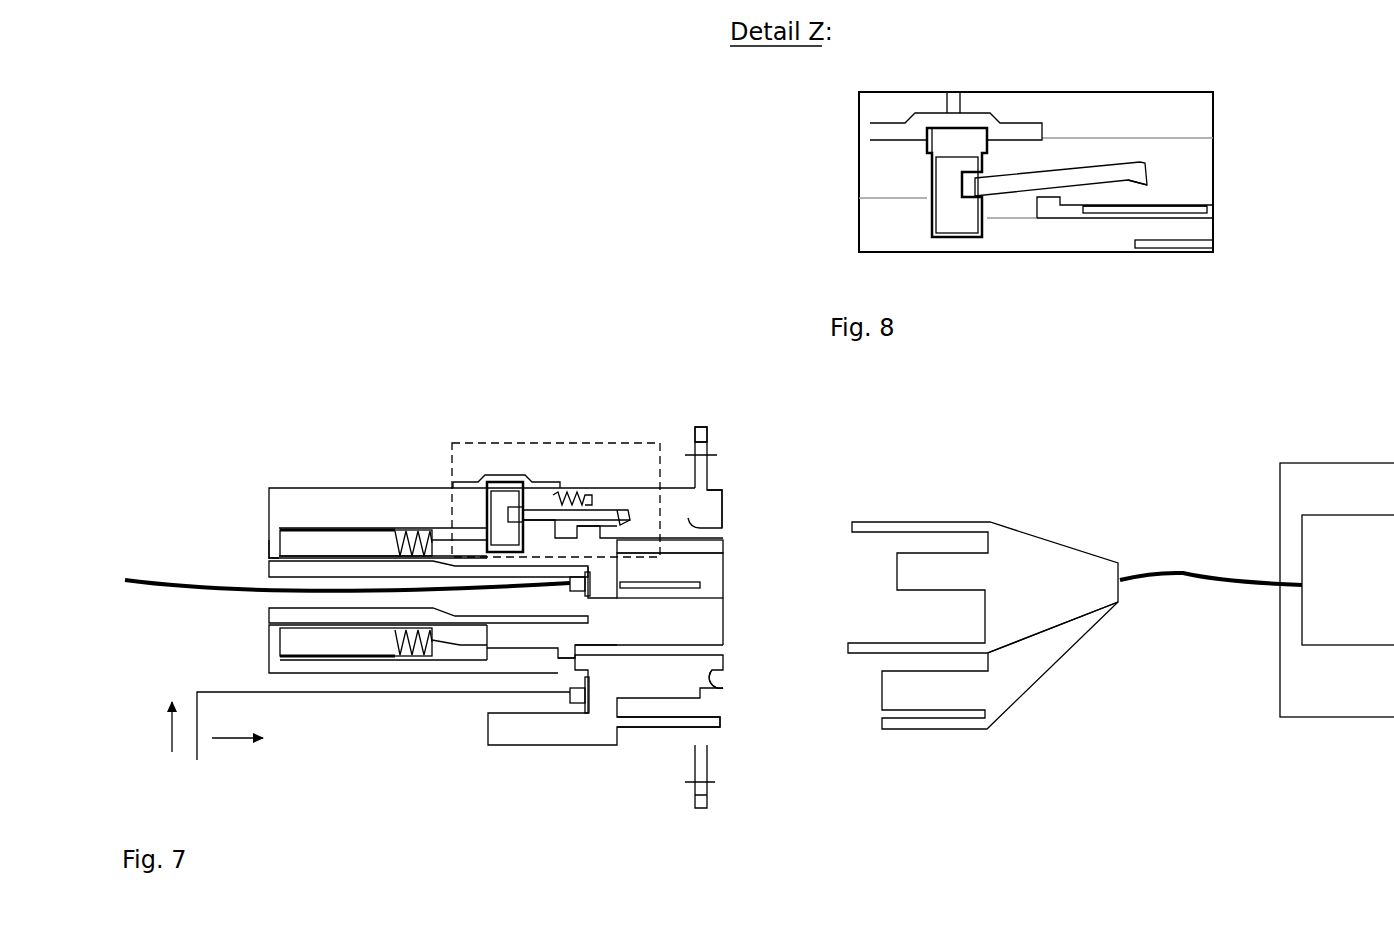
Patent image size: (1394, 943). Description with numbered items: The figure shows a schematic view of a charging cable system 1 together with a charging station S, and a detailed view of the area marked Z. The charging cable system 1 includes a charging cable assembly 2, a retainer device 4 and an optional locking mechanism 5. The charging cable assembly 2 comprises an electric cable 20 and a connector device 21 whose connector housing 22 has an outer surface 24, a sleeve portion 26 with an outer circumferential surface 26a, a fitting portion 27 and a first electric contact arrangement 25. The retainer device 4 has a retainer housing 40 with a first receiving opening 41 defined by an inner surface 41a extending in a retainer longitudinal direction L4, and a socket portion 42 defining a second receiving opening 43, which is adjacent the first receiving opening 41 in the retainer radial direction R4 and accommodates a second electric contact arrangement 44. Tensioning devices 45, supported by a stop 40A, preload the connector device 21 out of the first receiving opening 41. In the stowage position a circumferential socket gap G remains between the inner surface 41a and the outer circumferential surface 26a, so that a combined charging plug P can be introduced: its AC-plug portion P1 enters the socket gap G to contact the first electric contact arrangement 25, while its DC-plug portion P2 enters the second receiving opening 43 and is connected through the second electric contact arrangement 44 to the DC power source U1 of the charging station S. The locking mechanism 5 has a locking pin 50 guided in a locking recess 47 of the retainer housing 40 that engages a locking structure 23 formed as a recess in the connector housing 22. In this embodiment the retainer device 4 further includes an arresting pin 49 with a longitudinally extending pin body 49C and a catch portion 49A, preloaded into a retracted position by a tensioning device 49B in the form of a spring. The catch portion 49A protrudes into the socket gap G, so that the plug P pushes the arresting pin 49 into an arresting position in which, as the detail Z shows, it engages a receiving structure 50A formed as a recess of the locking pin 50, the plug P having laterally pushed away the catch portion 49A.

In FIG. 7, the charging cable system 1 is at (312, 250).
In FIG. 7, the charging cable assembly 2 is at (208, 495).
In FIG. 7, the retainer device 4 is at (290, 484).
In FIG. 7, the locking mechanism 5 is at (546, 340).
In FIG. 7, the electric cable 20 is at (152, 562).
In FIG. 7, the connector device 21 is at (730, 548).
In FIG. 7, the connector housing 22 is at (610, 630).
In FIG. 8, the connector housing 22 is at (1053, 238).
In FIG. 7, the locking structure 23 is at (490, 500).
In FIG. 8, the locking structure 23 is at (953, 237).
In FIG. 7, the outer surface 24 is at (468, 654).
In FIG. 7, the first electric contact arrangement 25 is at (738, 598).
In FIG. 7, the sleeve portion 26 is at (648, 534).
In FIG. 7, the outer circumferential surface 26a is at (612, 508).
In FIG. 7, the fitting portion 27 is at (564, 666).
In FIG. 7, the retainer housing 40 is at (366, 488).
In FIG. 8, the retainer housing 40 is at (1200, 170).
In FIG. 7, the stop 40A is at (273, 550).
In FIG. 7, the first receiving opening 41 is at (720, 530).
In FIG. 7, the inner surface 41a is at (688, 487).
In FIG. 7, the socket portion 42 is at (651, 752).
In FIG. 7, the second receiving opening 43 is at (711, 675).
In FIG. 7, the second electric contact arrangement 44 is at (750, 730).
In FIG. 7, the tensioning device 45 is at (344, 660).
In FIG. 7, the locking recess 47 is at (486, 490).
In FIG. 8, the locking recess 47 is at (927, 148).
In FIG. 8, the arresting pin 49 is at (1097, 177).
In FIG. 7, the catch portion 49A is at (628, 492).
In FIG. 8, the catch portion 49A is at (1140, 187).
In FIG. 7, the tensioning device 49B is at (568, 494).
In FIG. 8, the pin body 49C is at (1050, 180).
In FIG. 7, the locking pin 50 is at (512, 487).
In FIG. 8, the locking pin 50 is at (950, 208).
In FIG. 8, the receiving structure 50A is at (963, 188).
In FIG. 7, the socket gap G is at (724, 653).
In FIG. 7, the detail area Z is at (472, 440).
In FIG. 7, the charging plug P is at (1045, 689).
In FIG. 8, the charging plug P is at (1203, 205).
In FIG. 7, the AC-plug portion P1 is at (847, 546).
In FIG. 7, the DC-plug portion P2 is at (866, 704).
In FIG. 7, the charging station S is at (1347, 463).
In FIG. 7, the DC power source U1 is at (1330, 603).
In FIG. 7, the retainer radial direction R4 is at (172, 740).
In FIG. 7, the retainer longitudinal direction L4 is at (230, 740).